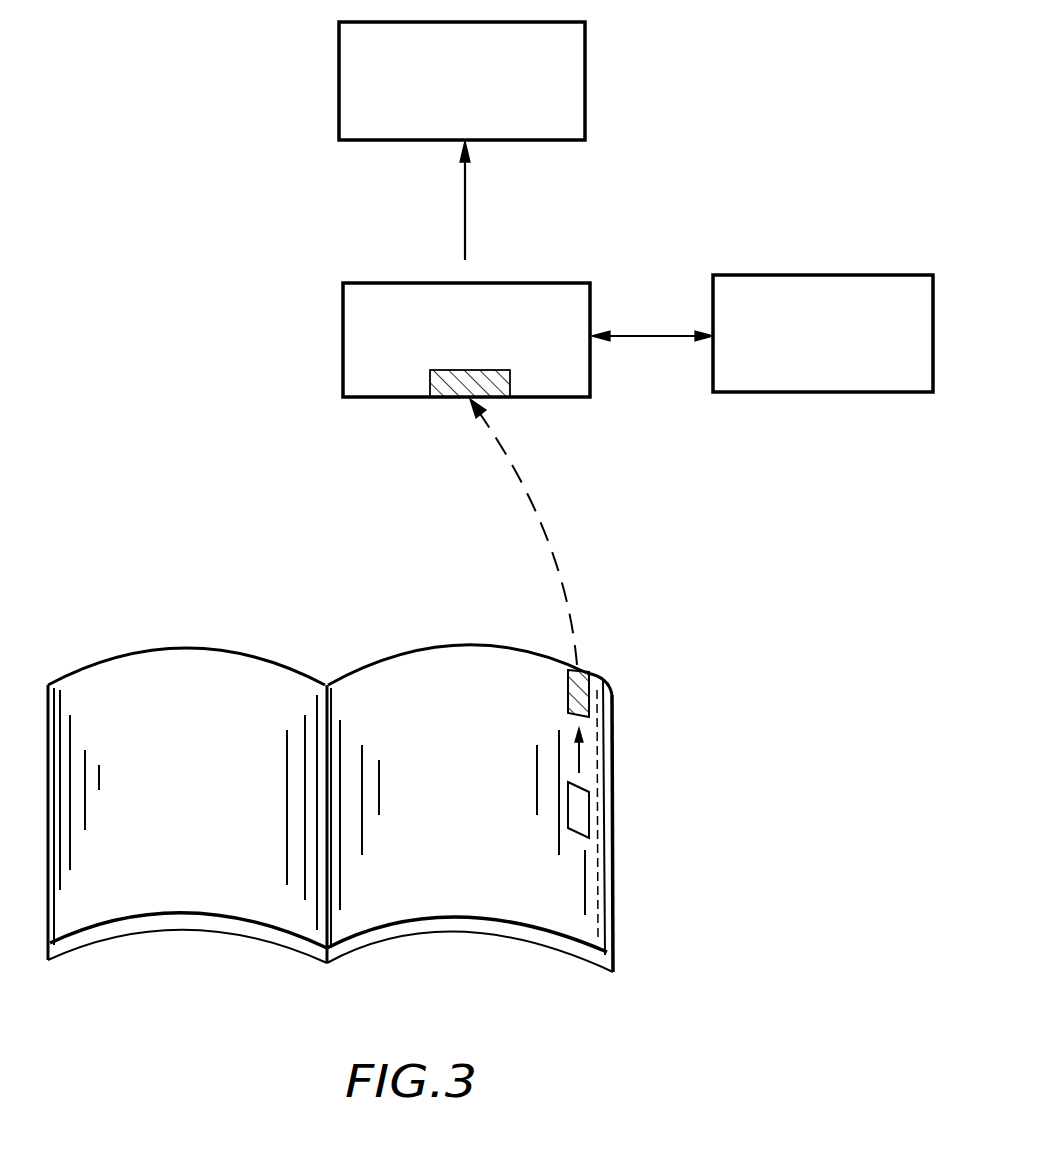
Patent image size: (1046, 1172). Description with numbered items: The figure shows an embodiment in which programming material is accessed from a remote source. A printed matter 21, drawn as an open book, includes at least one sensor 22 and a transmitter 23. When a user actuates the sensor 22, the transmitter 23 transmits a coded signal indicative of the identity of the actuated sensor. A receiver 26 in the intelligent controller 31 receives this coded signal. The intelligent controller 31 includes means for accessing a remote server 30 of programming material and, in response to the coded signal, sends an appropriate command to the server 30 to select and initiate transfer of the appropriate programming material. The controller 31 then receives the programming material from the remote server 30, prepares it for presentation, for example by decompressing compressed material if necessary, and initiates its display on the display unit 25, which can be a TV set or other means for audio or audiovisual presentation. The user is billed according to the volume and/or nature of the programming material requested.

The printed matter 21 is at (207, 648).
The sensor 22 is at (590, 826).
The transmitter 23 is at (590, 711).
The display unit 25 is at (586, 103).
The receiver 26 is at (512, 388).
The remote server 30 is at (830, 393).
The intelligent controller 31 is at (597, 317).